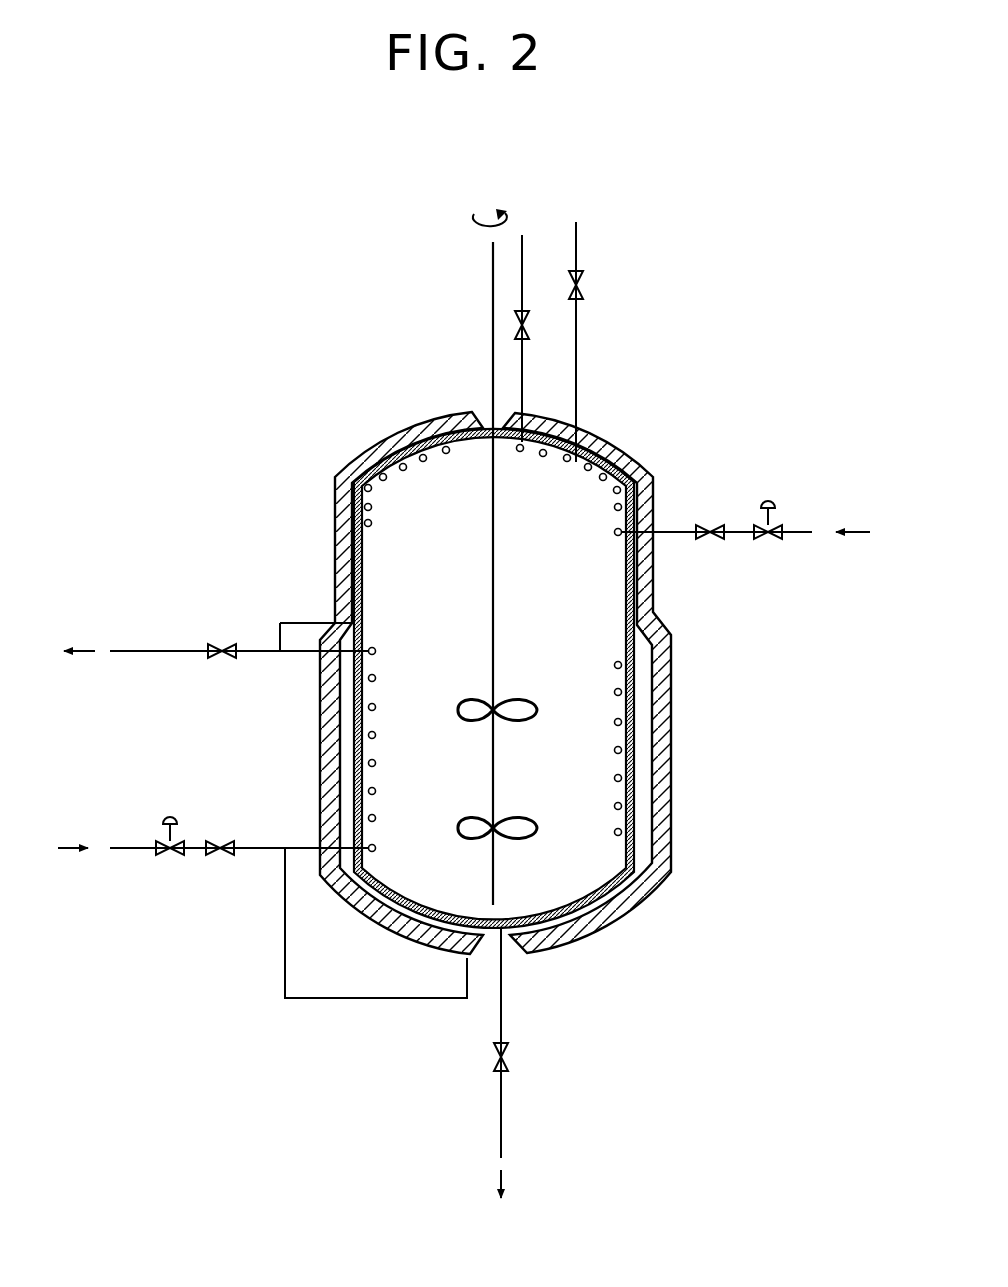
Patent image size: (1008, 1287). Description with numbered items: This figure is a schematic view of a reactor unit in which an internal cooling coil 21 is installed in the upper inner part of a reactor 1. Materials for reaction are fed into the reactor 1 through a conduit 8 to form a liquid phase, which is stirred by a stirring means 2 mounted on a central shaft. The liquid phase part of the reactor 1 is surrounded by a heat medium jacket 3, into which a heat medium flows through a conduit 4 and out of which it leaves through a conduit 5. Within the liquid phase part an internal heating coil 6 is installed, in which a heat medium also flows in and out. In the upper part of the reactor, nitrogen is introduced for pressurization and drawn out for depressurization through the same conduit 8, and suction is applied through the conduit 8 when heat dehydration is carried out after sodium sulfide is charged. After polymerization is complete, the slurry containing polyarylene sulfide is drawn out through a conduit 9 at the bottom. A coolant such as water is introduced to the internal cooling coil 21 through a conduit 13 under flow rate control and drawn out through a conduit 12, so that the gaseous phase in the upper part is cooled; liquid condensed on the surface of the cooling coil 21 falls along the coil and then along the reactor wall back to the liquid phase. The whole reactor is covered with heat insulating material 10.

The reactor 1 is at (364, 571).
The stirring means 2 is at (520, 706).
The heat medium jacket 3 is at (646, 791).
The conduit 4 is at (134, 858).
The conduit 5 is at (141, 640).
The internal heating coil 6 is at (386, 816).
The conduit 8 is at (585, 237).
The conduit 9 is at (512, 1110).
The heat insulating material 10 is at (664, 693).
The conduit 12 is at (527, 364).
The conduit 13 is at (802, 523).
The internal cooling coil 21 is at (545, 457).